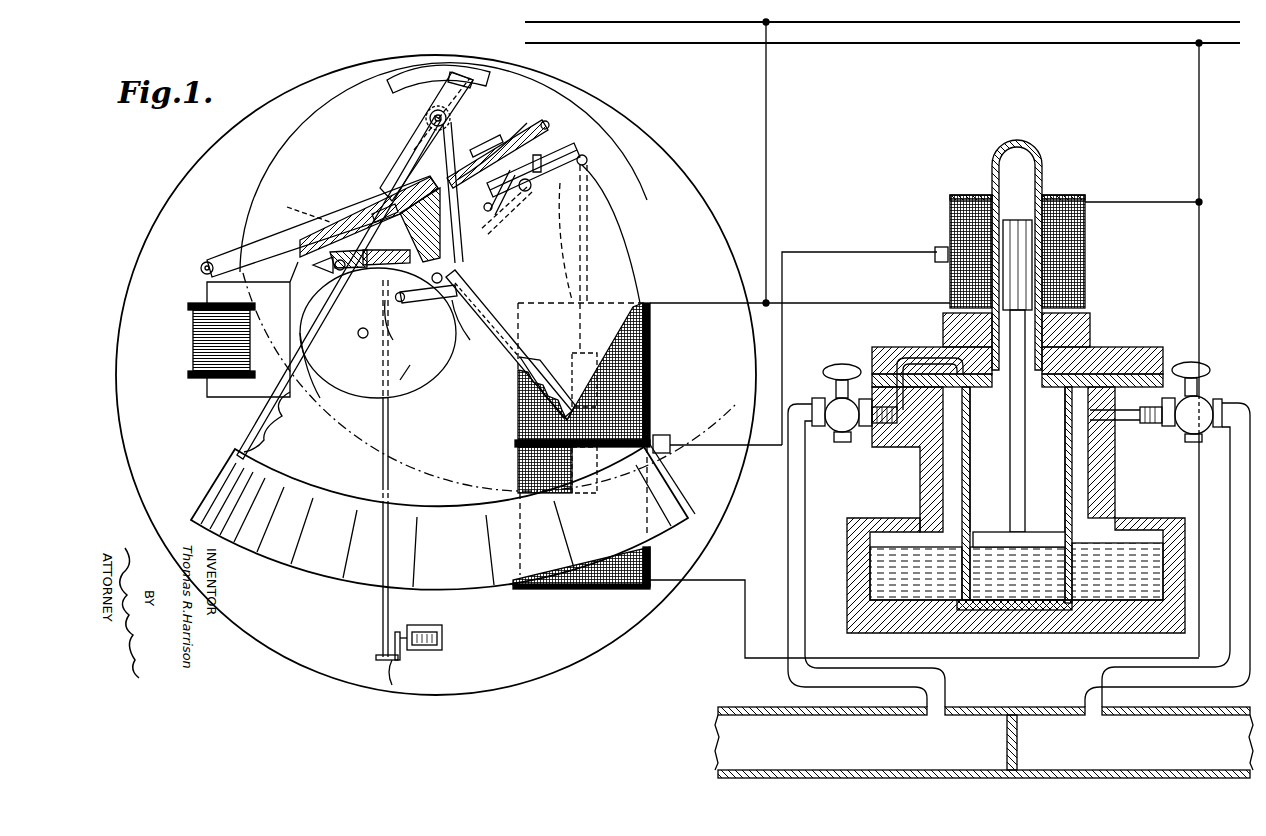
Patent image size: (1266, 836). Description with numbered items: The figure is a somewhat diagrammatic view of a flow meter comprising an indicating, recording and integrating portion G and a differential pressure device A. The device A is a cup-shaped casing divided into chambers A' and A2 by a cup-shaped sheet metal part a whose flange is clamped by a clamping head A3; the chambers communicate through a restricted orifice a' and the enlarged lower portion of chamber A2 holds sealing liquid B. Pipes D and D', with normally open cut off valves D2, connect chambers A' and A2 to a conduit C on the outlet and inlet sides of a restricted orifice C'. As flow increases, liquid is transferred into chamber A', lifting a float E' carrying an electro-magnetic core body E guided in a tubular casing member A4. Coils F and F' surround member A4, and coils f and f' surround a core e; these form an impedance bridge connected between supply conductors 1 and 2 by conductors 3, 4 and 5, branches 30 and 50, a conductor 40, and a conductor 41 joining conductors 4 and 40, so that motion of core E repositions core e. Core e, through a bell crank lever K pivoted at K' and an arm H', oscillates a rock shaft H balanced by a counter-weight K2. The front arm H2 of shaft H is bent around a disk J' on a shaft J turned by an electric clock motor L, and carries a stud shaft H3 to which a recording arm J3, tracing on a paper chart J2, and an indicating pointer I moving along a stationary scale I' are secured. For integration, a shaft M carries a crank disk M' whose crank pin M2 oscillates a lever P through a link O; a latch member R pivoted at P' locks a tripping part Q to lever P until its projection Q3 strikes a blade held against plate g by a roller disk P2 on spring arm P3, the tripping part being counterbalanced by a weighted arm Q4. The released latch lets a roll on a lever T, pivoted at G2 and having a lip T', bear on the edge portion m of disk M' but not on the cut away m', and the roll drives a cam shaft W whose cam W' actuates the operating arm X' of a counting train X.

The alternating current supply conductor 1 is at (907, 45).
The alternating current supply conductor 2 is at (857, 24).
The conductor 3 is at (1200, 152).
The conductor 4 is at (937, 250).
The conductor 5 is at (470, 66).
The branch conductor 30 is at (1200, 296).
The conductor 40 is at (670, 440).
The conductor 41 is at (783, 340).
The branch conductor 50 is at (660, 312).
The differential pressure device A is at (917, 445).
The chamber A' is at (1017, 459).
The chamber A2 is at (1082, 483).
The clamping head A3 is at (1117, 347).
The casing member A4 is at (1042, 153).
The sealing liquid B is at (900, 543).
The conduit C is at (984, 726).
The restricted orifice C' is at (1034, 722).
The pipe D is at (866, 555).
The pipe D' is at (1167, 555).
The cut off valve D2 is at (1214, 390).
The electro-magnetic core body E is at (1017, 353).
The float E' is at (1019, 516).
The coil F is at (1039, 251).
The coil F' is at (1087, 251).
The indicating, recording and integrating portion G is at (698, 136).
The pivot G2 is at (207, 262).
The rock shaft H is at (471, 101).
The arm H' is at (432, 136).
The arm H2 is at (445, 100).
The stud shaft H3 is at (426, 118).
The indicating pointer I is at (350, 287).
The stationary scale I' is at (443, 521).
The rotatable shaft J is at (426, 279).
The disk J' is at (604, 229).
The paper record chart J2 is at (593, 173).
The recording arm J3 is at (475, 140).
The bell crank lever K is at (543, 158).
The pivot K' is at (519, 195).
The counter-weight K2 is at (493, 243).
The electric clock motor L is at (210, 292).
The shaft M is at (357, 315).
The crank disk M' is at (312, 369).
The crank pin M2 is at (397, 312).
The link O is at (453, 327).
The lever element P is at (401, 213).
The pivot P' is at (336, 273).
The disk P2 is at (567, 118).
The spring arm P3 is at (522, 192).
The tripping part Q is at (532, 120).
The transverse projection Q3 is at (548, 128).
The weighted arm Q4 is at (312, 265).
The latch member R is at (385, 288).
The lever T is at (322, 226).
The lip T' is at (366, 199).
The cam shaft W is at (399, 470).
The cam W' is at (381, 684).
The counting train X is at (435, 623).
The operating arm X' is at (423, 653).
The cup-shaped part a is at (1017, 495).
The restricted orifice a' is at (1014, 627).
The magnetic core e is at (598, 340).
The coil f is at (600, 439).
The coil f' is at (856, 599).
The plate g is at (317, 212).
The peripheral edge portion m is at (378, 333).
The cut away portion m' is at (425, 365).